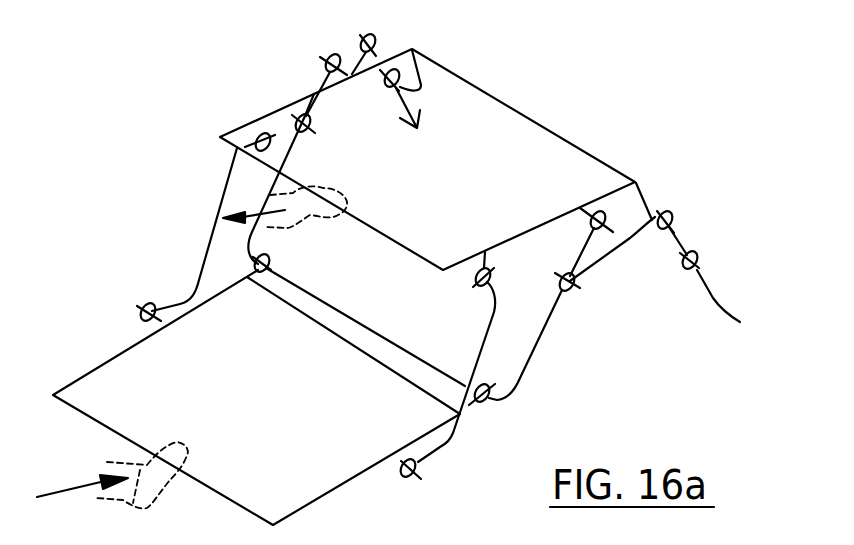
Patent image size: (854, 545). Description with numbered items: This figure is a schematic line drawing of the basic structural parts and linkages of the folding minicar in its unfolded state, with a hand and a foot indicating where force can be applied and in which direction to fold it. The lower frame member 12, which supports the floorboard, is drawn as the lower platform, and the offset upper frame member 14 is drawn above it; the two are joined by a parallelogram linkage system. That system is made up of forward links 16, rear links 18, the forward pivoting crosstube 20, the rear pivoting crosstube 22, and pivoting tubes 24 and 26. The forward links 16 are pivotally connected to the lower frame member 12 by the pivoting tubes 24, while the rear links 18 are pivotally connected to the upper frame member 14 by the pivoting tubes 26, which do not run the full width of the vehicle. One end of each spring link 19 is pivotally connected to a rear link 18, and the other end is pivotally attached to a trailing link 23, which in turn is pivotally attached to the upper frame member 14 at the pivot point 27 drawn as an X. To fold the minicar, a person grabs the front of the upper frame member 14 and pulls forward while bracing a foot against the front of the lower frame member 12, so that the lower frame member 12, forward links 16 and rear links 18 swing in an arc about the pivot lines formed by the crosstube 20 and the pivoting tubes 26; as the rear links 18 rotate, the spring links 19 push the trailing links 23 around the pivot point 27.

The lower frame member 12 is at (143, 380).
The upper frame member 14 is at (343, 120).
The forward links 16 is at (204, 246).
The rear links 18 is at (272, 181).
The spring links 19 is at (607, 260).
The forward pivoting crosstube 20 is at (278, 150).
The rear pivoting crosstube 22 is at (415, 355).
The trailing links 23 is at (415, 108).
The pivoting tubes 24 is at (390, 458).
The pivoting tubes 26 is at (334, 56).
The pivot point 27 is at (395, 62).